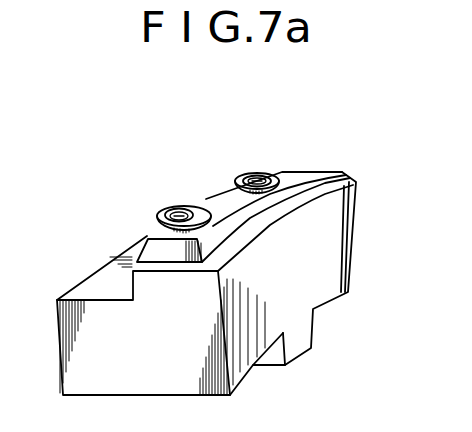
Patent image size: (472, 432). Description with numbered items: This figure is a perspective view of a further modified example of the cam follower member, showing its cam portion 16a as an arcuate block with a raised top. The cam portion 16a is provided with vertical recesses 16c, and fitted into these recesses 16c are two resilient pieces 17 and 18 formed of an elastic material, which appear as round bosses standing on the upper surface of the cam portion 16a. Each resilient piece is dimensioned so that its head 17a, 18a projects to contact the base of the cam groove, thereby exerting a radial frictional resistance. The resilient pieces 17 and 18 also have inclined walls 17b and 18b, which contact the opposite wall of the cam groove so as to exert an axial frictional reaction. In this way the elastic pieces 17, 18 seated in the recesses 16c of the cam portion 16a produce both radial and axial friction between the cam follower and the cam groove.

The cam portion 16a is at (212, 193).
The vertical recesses 16c is at (280, 228).
The resilient piece 17 is at (131, 192).
The head 17a is at (173, 212).
The inclined wall 17b is at (158, 223).
The resilient piece 18 is at (227, 159).
The head 18a is at (254, 173).
The inclined wall 18b is at (280, 228).